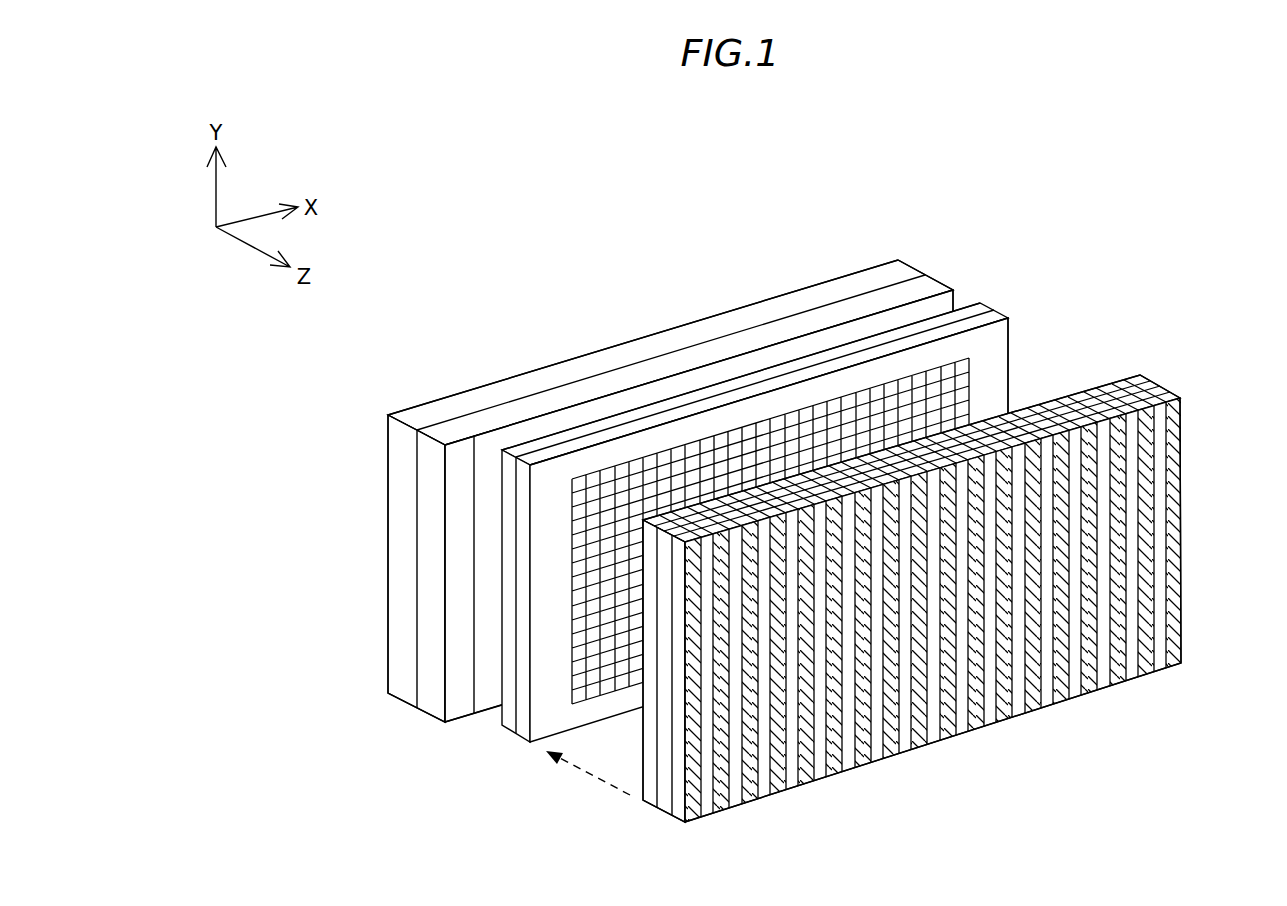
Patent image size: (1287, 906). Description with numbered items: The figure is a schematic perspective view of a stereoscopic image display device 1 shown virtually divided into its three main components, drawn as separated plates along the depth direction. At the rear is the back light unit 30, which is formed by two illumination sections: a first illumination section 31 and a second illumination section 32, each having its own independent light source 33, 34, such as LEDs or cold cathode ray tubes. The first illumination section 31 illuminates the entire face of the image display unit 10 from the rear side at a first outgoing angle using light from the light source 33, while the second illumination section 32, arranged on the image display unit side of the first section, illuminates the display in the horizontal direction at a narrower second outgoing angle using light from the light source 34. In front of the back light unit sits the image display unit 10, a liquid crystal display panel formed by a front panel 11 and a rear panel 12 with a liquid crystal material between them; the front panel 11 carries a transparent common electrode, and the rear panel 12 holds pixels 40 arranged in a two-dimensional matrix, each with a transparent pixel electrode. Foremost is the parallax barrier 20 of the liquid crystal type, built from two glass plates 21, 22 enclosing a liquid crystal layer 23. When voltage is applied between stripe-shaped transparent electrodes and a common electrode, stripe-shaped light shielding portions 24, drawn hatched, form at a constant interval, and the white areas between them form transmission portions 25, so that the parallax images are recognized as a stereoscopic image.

The stereoscopic image display device 1 is at (508, 152).
The image display unit 10 is at (764, 509).
The front panel 11 is at (1012, 316).
The rear panel 12 is at (990, 308).
The parallax barrier 20 is at (907, 613).
The glass plate 21 is at (1182, 400).
The glass plate 22 is at (1124, 388).
The liquid crystal layer 23 is at (1150, 385).
The light shielding portion 24 is at (886, 745).
The transmission portion 25 is at (1069, 690).
The back light unit 30 is at (626, 466).
The first illumination section 31 is at (705, 326).
The second illumination section 32 is at (488, 413).
The light source 33 is at (405, 418).
The light source 34 is at (430, 673).
The pixel 40 is at (580, 583).